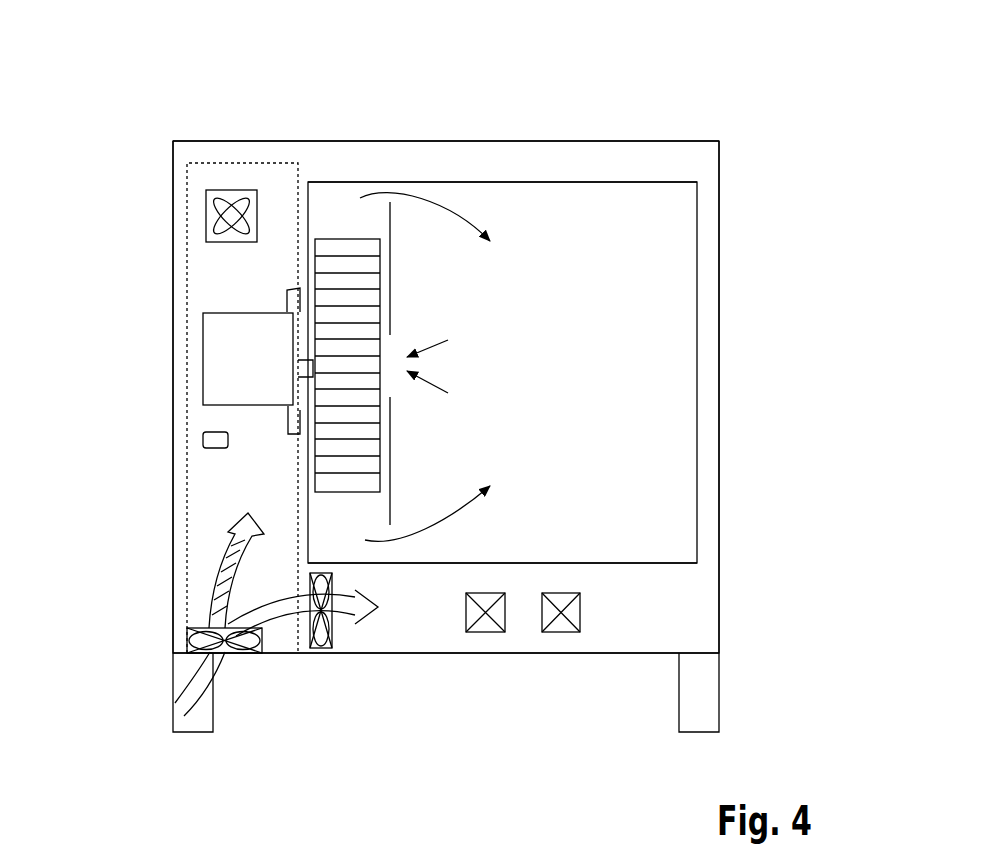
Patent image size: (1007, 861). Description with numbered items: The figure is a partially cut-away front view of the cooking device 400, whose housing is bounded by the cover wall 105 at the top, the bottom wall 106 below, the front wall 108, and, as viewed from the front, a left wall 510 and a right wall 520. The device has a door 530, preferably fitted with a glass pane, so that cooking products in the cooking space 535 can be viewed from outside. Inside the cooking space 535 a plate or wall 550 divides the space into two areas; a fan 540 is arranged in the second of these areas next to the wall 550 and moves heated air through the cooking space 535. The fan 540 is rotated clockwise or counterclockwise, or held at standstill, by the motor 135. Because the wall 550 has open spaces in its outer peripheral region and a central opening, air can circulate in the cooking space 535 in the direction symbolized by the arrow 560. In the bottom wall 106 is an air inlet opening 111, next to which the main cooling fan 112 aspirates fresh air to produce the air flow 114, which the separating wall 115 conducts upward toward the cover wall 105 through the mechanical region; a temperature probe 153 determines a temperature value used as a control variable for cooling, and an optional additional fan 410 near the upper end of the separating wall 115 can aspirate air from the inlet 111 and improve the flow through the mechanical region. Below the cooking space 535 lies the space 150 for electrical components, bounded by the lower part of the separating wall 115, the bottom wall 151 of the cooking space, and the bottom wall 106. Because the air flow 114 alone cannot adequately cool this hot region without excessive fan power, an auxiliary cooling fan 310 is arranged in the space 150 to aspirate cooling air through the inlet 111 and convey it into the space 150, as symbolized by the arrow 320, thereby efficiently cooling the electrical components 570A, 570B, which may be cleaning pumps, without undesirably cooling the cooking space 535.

The cooking device 400 is at (717, 28).
The cover wall 105 is at (535, 140).
The bottom wall 106 is at (415, 655).
The front wall 108 is at (656, 249).
The air inlet opening 111 is at (185, 668).
The main cooling fan 112 is at (270, 655).
The air flow 114 is at (228, 515).
The separating wall 115 is at (187, 286).
The motor 135 is at (270, 374).
The space for electrical components 150 is at (437, 617).
The bottom wall of the cooking space 151 is at (625, 563).
The temperature probe 153 is at (203, 438).
The auxiliary cooling fan 310 is at (312, 655).
The air flow 320 is at (370, 612).
The additional fan 410 is at (205, 207).
The left wall 510 is at (173, 358).
The right wall 520 is at (719, 355).
The door 530 is at (595, 374).
The cooking space 535 is at (617, 217).
The fan 540 is at (333, 238).
The plate or wall 550 is at (402, 195).
The arrow 560 is at (477, 218).
The electrical component 570A is at (480, 632).
The electrical component 570B is at (560, 632).